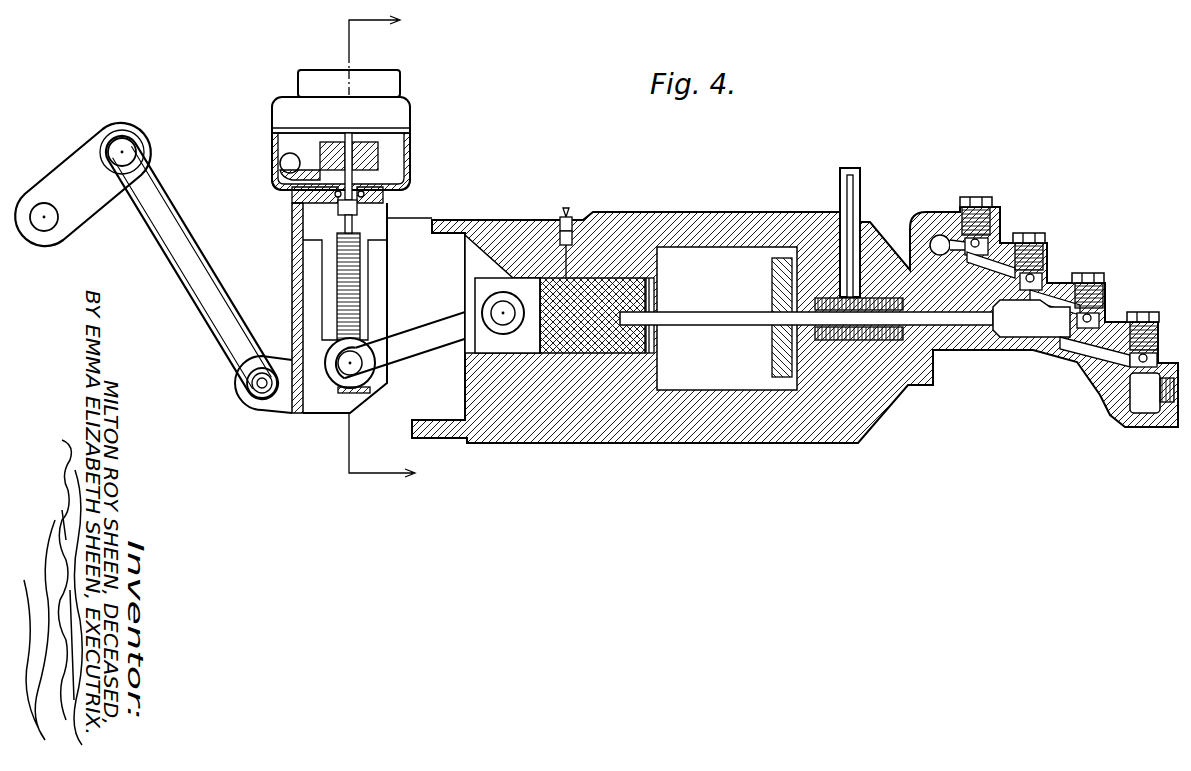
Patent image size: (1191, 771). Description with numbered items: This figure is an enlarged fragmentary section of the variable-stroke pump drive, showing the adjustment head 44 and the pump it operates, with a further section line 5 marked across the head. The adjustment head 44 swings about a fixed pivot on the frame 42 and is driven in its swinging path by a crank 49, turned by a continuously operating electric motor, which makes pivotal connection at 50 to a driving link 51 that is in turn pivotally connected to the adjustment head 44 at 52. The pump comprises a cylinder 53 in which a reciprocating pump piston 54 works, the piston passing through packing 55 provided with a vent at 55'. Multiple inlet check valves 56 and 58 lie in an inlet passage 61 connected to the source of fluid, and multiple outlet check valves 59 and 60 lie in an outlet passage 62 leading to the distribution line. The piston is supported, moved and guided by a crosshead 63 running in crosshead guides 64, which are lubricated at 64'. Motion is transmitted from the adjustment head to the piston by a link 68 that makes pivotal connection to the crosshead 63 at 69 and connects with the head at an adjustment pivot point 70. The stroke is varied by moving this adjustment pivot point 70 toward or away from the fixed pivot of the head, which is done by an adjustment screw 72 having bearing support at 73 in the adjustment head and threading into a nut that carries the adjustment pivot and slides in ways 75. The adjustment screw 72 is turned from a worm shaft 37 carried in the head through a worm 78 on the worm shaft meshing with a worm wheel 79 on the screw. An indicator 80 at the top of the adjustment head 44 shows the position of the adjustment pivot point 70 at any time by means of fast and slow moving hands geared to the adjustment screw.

The section line 5- 5 is at (380, 248).
The worm shaft 37 is at (282, 171).
The frame 42 is at (660, 212).
The adjustment head 44 is at (291, 233).
The crank 49 is at (80, 162).
The pivotal connection 50 is at (132, 148).
The driving link 51 is at (186, 228).
The pivotal connection 52 is at (250, 385).
The cylinder 53 is at (1042, 327).
The pump piston 54 is at (708, 313).
The packing 55 is at (806, 331).
The vent 55' is at (872, 232).
The inlet check valve 56 is at (1146, 364).
The inlet check valve 58 is at (1086, 340).
The outlet check valve 59 is at (1058, 275).
The outlet check valve 60 is at (982, 240).
The inlet passage 61 is at (1146, 408).
The outlet passage 62 is at (942, 238).
The crosshead 63 is at (660, 343).
The crosshead guides 64 is at (504, 304).
The lubrication point 64' is at (569, 230).
The link 68 is at (422, 326).
The pivotal connection 69 is at (463, 400).
The adjustment pivot point 70 is at (345, 368).
The adjustment screw 72 is at (362, 267).
The bearing support 73 is at (386, 193).
The ways 75 is at (310, 285).
The worm 78 is at (284, 158).
The worm wheel 79 is at (397, 155).
The indicator 80 is at (400, 80).